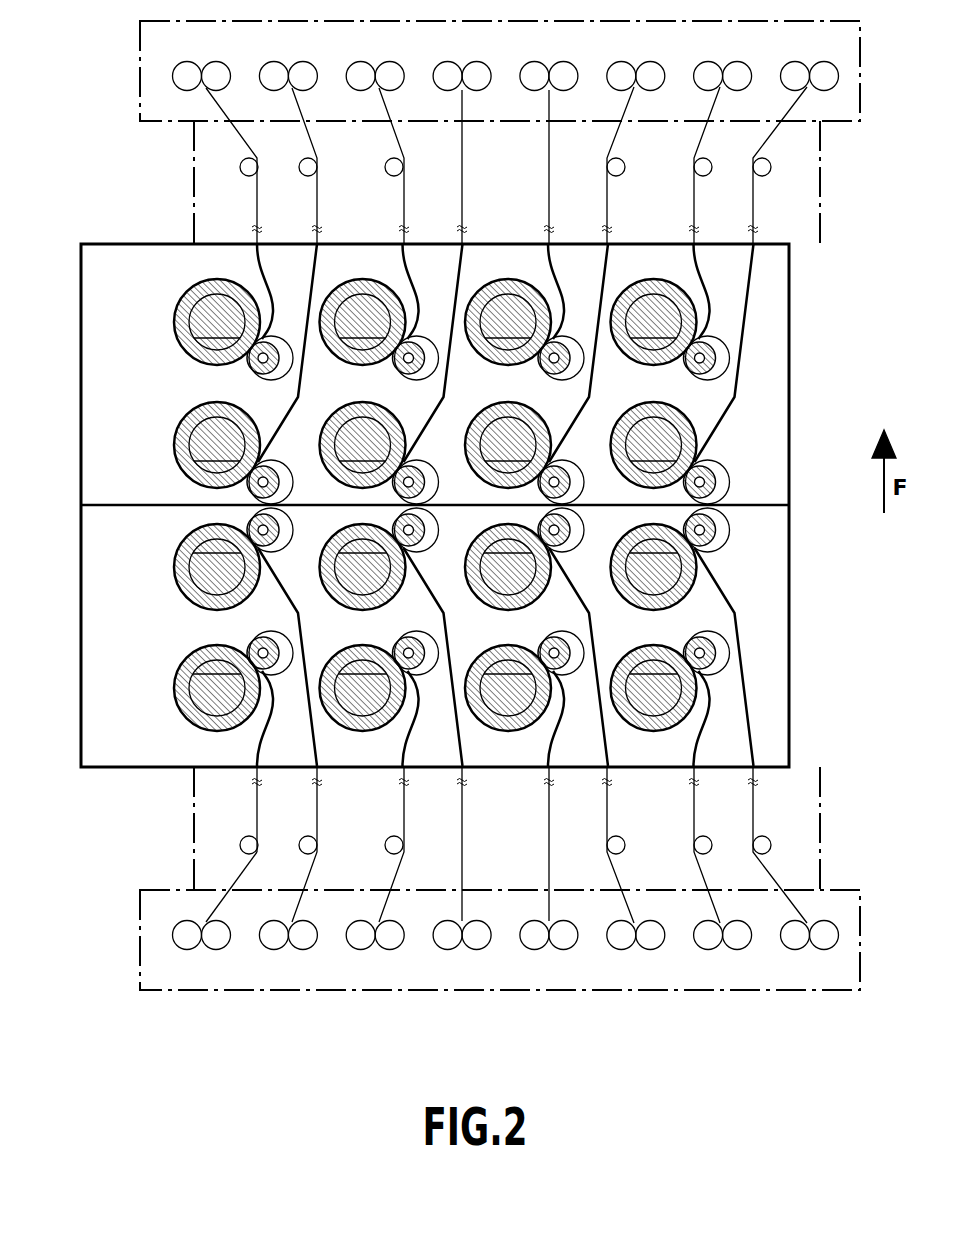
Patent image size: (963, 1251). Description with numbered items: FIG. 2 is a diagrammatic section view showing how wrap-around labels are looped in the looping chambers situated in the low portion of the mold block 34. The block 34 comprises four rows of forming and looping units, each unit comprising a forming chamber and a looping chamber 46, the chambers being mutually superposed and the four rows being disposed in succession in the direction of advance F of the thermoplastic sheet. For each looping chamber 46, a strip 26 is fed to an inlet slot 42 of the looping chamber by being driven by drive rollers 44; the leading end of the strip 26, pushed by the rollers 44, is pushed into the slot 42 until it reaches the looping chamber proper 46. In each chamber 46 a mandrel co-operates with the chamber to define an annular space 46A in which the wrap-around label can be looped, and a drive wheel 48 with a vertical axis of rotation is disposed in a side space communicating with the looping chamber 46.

The mold block 34 is at (100, 347).
The looping chamber 46 is at (183, 659).
The annular space 46A is at (188, 701).
The drive wheel 48 is at (253, 637).
The inlet slot 42 is at (259, 748).
The strip 26 is at (257, 804).
The drive rollers 44 is at (247, 843).